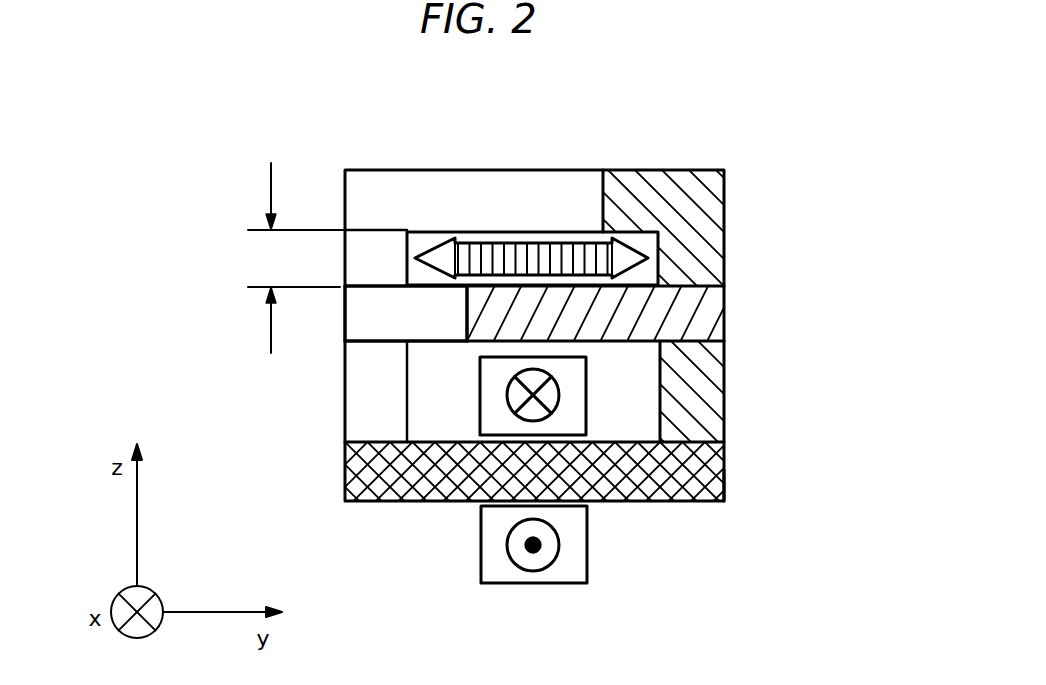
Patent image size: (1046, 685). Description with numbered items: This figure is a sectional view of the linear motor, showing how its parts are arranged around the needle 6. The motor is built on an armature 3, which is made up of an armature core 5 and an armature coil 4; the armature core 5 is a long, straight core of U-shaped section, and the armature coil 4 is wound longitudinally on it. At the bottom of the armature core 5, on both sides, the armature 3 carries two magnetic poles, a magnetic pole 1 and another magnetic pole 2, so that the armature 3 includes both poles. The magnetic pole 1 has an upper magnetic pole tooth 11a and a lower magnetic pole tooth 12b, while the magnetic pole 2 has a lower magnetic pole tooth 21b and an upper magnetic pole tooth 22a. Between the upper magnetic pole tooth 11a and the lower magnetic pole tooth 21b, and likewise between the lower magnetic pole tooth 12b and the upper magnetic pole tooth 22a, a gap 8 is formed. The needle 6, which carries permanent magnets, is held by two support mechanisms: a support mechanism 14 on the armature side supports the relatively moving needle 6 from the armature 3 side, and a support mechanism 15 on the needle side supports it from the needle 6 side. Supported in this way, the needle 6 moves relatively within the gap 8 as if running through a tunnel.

The magnetic pole 1 is at (373, 407).
The magnetic pole 2 is at (690, 400).
The armature 3 is at (737, 489).
The armature coil 4 is at (493, 567).
The armature core 5 is at (385, 502).
The needle 6 is at (540, 252).
The gap 8 is at (326, 258).
The upper magnetic pole tooth 11a is at (482, 197).
The lower magnetic pole tooth 12b is at (407, 313).
The support mechanism 14 is at (418, 236).
The support mechanism 15 is at (439, 238).
The lower magnetic pole tooth 21b is at (650, 318).
The upper magnetic pole tooth 22a is at (587, 205).